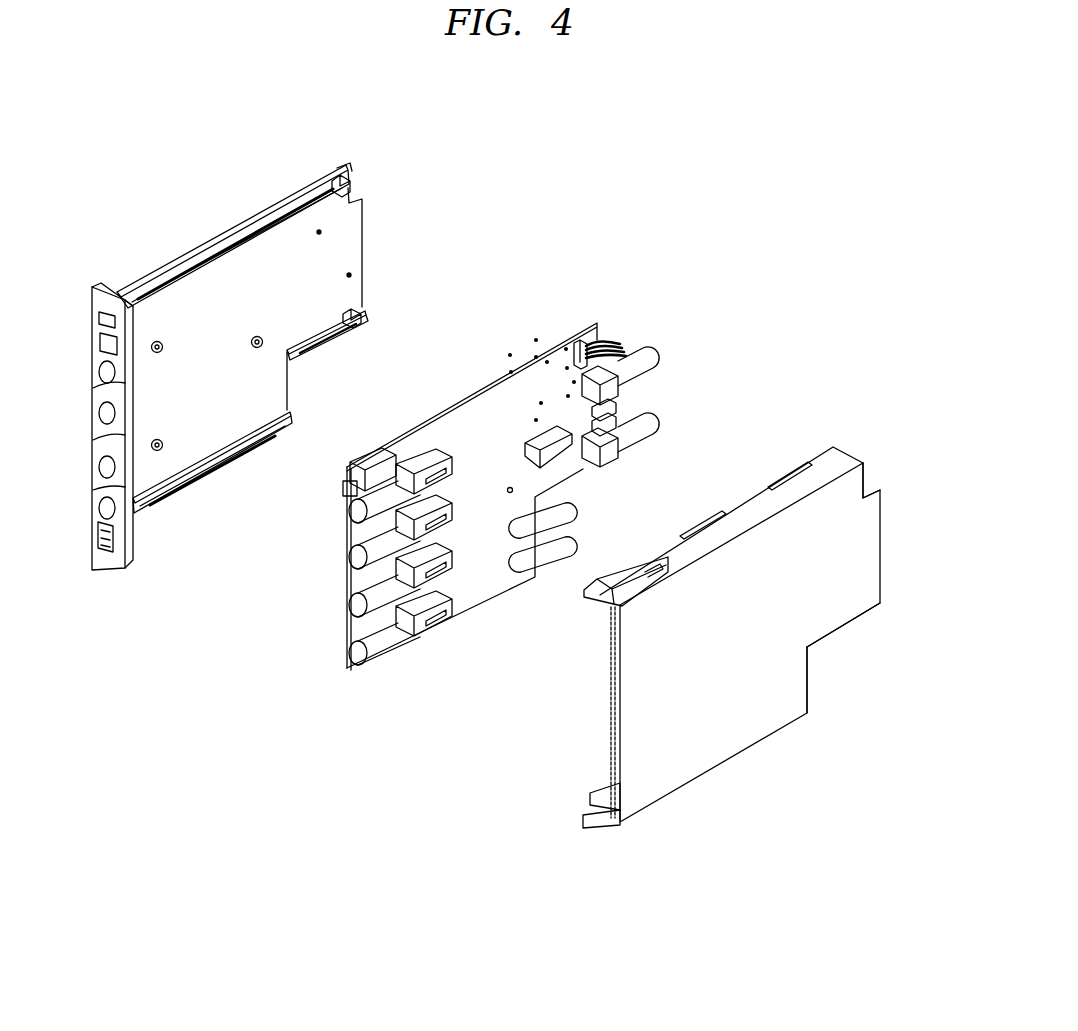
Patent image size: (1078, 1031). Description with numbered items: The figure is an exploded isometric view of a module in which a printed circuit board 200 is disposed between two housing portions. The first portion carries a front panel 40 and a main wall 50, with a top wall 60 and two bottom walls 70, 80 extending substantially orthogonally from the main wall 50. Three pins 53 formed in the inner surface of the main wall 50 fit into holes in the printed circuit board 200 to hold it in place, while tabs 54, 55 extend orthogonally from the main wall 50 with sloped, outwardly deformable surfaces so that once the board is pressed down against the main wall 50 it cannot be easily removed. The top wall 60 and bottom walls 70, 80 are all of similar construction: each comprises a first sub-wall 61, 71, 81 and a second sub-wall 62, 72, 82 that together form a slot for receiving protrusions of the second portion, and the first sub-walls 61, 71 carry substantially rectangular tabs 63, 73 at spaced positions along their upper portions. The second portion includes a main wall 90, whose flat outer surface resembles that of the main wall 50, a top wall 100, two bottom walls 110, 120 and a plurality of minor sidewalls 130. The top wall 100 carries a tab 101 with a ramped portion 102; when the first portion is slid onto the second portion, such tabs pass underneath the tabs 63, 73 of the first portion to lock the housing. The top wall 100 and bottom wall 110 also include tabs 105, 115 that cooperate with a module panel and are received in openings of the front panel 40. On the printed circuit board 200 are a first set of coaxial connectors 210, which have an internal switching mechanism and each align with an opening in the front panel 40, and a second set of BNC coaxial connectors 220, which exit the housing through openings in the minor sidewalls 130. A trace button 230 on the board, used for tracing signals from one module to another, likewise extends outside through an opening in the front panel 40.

The front panel 40 is at (113, 572).
The main wall 50 is at (274, 327).
The pins 53 is at (163, 440).
The tab 54 is at (338, 180).
The tab 55 is at (350, 330).
The top wall 60 is at (234, 203).
The first sub-wall 61 is at (211, 242).
The second sub-wall 62 is at (245, 246).
The tabs 63 is at (232, 240).
The bottom wall 70 is at (212, 464).
The first sub-wall 71 is at (250, 462).
The second sub-wall 72 is at (245, 455).
The tabs 73 is at (230, 470).
The bottom wall 80 is at (359, 351).
The first sub-wall 81 is at (300, 360).
The second sub-wall 82 is at (308, 340).
The main wall 90 is at (695, 752).
The top wall 100 is at (721, 634).
The tab 101 is at (770, 478).
The ramped portion 102 is at (689, 520).
The tab 105 is at (636, 570).
The bottom wall 110 is at (603, 797).
The tab 115 is at (598, 830).
The bottom wall 120 is at (843, 630).
The minor sidewalls 130 is at (866, 494).
The printed circuit board 200 is at (473, 417).
The first set of coaxial connectors 210 is at (352, 648).
The second set of coaxial connectors 220 is at (650, 428).
The trace button 230 is at (373, 480).